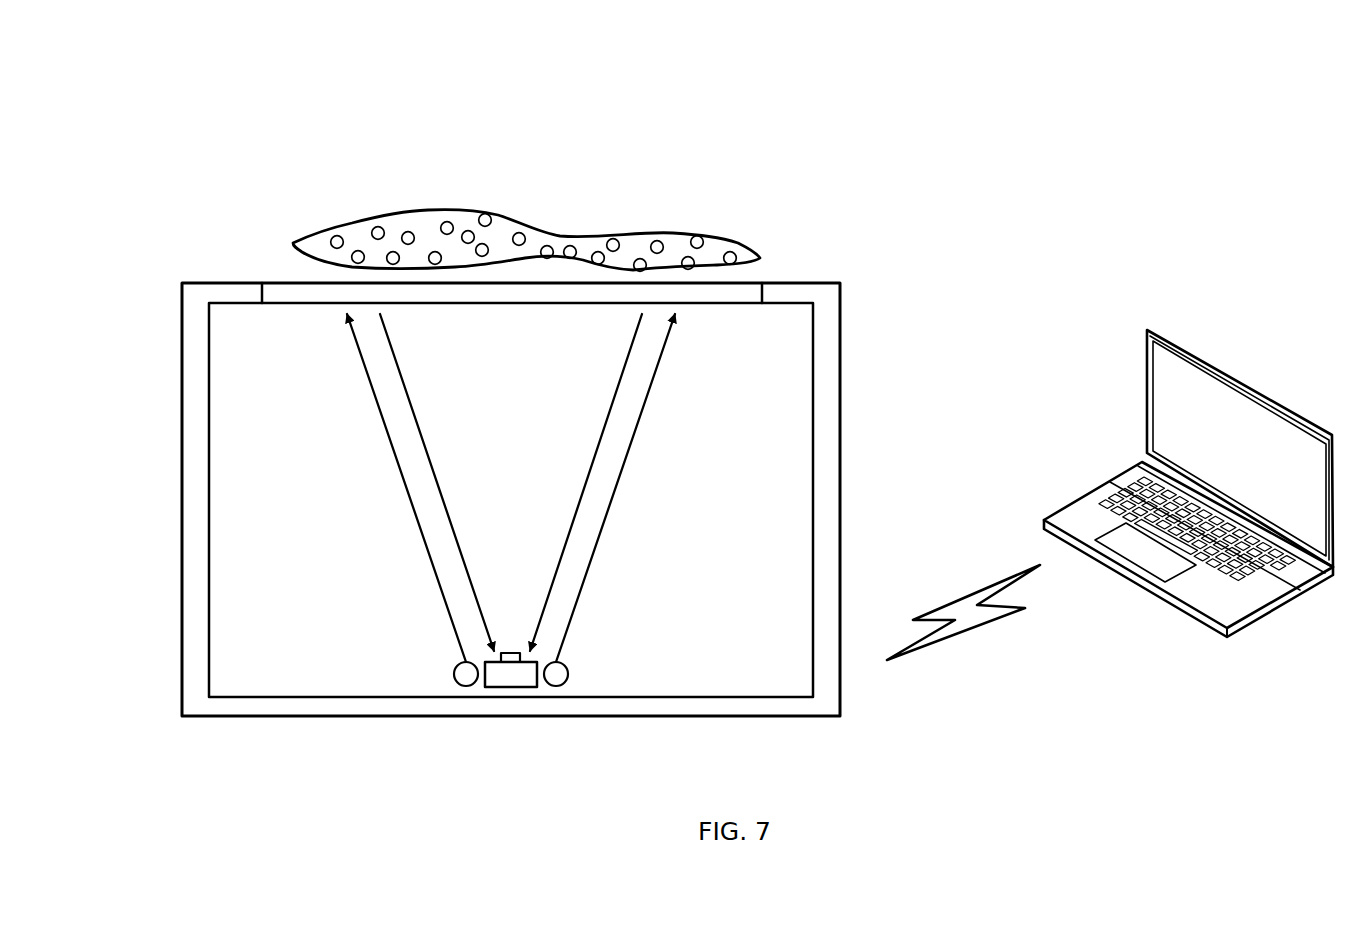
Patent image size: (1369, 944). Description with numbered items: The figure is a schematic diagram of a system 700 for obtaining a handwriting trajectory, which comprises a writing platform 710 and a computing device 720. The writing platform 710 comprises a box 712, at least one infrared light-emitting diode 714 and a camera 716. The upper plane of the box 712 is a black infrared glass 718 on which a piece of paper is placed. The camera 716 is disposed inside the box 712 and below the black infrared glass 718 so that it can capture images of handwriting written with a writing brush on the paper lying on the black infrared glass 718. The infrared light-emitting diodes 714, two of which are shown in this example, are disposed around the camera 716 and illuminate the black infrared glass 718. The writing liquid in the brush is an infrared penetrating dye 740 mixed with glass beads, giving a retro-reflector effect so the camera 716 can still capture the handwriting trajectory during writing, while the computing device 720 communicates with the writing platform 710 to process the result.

The system 700 is at (1122, 126).
The writing platform 710 is at (198, 263).
The box 712 is at (841, 397).
The infrared light-emitting diode 714 is at (467, 687).
The camera 716 is at (511, 652).
The black infrared glass 718 is at (727, 305).
The computing device 720 is at (1244, 378).
The infrared penetrating dye 740 is at (714, 236).